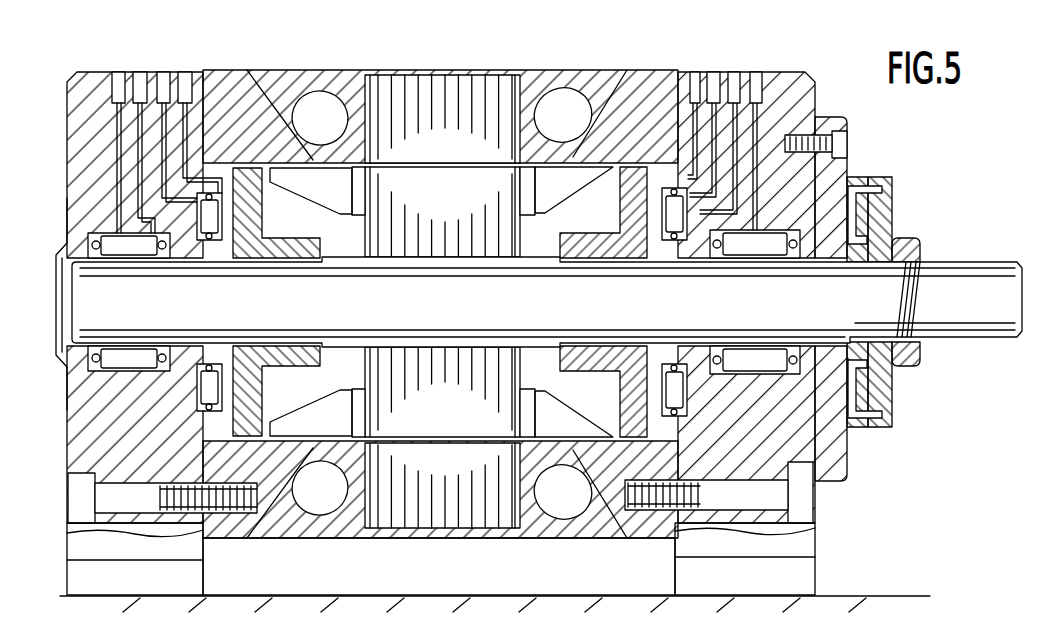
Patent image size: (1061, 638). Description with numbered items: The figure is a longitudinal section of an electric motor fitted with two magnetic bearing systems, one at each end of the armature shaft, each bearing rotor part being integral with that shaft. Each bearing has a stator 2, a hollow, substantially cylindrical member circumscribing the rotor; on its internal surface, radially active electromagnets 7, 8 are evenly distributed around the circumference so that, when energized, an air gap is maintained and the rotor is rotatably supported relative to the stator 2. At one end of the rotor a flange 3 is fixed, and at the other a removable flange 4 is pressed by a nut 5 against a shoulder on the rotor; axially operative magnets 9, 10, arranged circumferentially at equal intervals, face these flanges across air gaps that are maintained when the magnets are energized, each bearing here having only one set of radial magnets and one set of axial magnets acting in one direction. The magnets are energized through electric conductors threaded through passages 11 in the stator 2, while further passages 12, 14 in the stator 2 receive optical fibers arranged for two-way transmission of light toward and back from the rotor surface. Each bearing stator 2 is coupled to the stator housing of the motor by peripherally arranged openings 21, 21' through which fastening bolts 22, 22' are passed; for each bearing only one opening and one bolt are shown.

The stator 2 is at (438, 275).
The flange 3 is at (645, 180).
The removable flange 4 is at (247, 185).
The nut 5 is at (920, 250).
The electromagnet 7 is at (855, 225).
The electromagnet 8 is at (108, 240).
The axially operative magnet 9 is at (670, 211).
The axially operative magnet 10 is at (100, 192).
The passages with electric conductors 11 is at (173, 72).
The passage 12 is at (702, 67).
The passage 14 is at (758, 70).
The opening 21 is at (809, 492).
The opening 21' is at (79, 472).
The fastening bolt 22 is at (735, 525).
The fastening bolt 22' is at (144, 503).